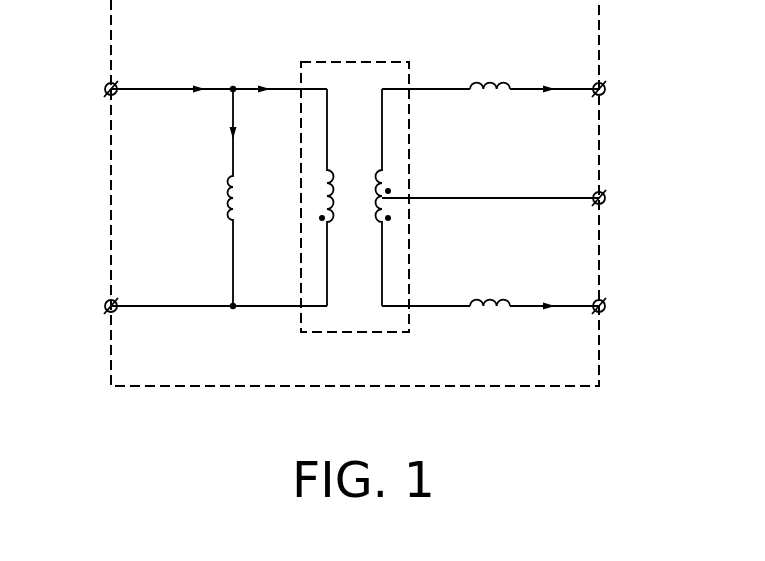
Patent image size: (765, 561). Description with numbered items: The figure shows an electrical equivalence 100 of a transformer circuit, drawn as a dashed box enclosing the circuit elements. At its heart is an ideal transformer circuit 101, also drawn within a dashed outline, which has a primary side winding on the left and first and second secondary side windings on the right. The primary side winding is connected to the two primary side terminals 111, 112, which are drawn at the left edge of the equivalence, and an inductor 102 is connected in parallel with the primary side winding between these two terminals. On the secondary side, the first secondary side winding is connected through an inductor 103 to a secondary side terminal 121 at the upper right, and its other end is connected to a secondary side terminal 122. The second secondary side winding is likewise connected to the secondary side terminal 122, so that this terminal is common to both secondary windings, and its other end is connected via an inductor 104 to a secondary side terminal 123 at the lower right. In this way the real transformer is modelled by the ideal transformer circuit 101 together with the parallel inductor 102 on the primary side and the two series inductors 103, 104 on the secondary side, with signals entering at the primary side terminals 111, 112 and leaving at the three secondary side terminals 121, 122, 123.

The electrical equivalence 100 is at (517, 388).
The ideal transformer circuit 101 is at (367, 62).
The inductor 102 is at (224, 193).
The inductor 103 is at (491, 80).
The inductor 104 is at (491, 297).
The primary side terminal 111 is at (104, 89).
The primary side terminal 112 is at (104, 305).
The secondary side terminal 121 is at (606, 89).
The secondary side terminal 122 is at (606, 198).
The secondary side terminal 123 is at (606, 306).